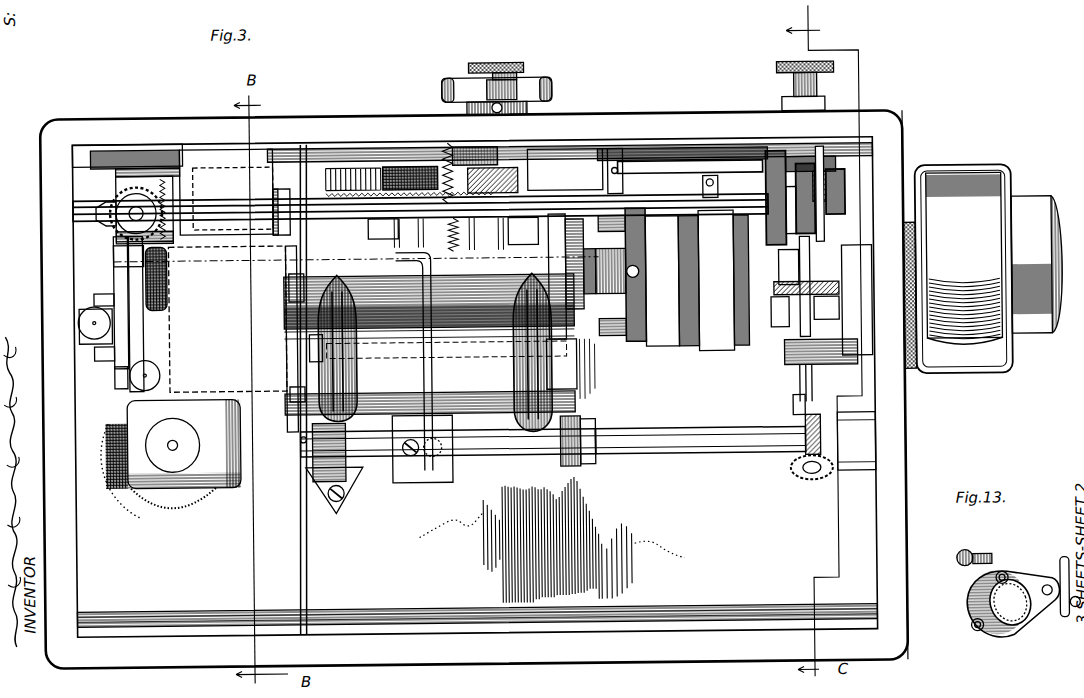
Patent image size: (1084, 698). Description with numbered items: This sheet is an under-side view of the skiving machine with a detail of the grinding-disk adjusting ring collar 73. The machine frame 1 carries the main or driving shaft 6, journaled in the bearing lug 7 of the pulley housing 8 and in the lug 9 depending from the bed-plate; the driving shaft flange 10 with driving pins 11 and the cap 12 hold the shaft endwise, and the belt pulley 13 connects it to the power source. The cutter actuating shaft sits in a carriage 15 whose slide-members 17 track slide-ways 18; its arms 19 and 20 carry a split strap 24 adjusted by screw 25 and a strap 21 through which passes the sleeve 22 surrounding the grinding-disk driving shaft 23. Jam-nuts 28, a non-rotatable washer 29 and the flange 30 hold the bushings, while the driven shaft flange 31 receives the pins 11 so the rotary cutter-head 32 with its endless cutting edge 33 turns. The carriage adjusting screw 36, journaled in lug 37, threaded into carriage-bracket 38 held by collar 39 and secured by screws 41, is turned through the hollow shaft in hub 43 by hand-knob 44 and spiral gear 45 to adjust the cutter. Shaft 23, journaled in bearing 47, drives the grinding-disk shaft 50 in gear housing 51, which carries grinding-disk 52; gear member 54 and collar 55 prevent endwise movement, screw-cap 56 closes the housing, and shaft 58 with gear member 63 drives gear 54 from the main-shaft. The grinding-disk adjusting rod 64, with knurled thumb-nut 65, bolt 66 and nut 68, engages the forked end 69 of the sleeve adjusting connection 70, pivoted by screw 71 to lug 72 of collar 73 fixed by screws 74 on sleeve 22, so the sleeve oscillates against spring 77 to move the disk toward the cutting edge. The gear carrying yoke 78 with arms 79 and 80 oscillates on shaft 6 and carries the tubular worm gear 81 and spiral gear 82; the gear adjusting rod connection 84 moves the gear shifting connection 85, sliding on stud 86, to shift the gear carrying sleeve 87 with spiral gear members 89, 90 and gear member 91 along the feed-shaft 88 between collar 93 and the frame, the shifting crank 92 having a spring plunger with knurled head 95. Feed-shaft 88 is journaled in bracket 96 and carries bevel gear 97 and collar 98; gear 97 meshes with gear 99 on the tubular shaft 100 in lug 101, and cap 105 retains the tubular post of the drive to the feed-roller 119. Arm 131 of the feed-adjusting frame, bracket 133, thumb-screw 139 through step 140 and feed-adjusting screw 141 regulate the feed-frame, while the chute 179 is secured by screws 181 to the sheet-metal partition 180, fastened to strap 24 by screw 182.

In FIG. 3, the machine frame 1 is at (906, 452).
In FIG. 3, the main or driving shaft 6 is at (870, 268).
In FIG. 3, the bearing lug 7 is at (1027, 205).
In FIG. 3, the pulley housing 8 is at (963, 180).
In FIG. 3, the lug 9 is at (714, 280).
In FIG. 3, the driving shaft flange 10 is at (680, 280).
In FIG. 3, the driving pins 11 is at (658, 232).
In FIG. 3, the cap 12 is at (1058, 245).
In FIG. 3, the belt pulley 13 is at (964, 258).
In FIG. 3, the carriage 15 is at (575, 318).
In FIG. 3, the slide-members 17 is at (335, 222).
In FIG. 3, the slide-ways 18 is at (578, 384).
In FIG. 3, the arm 19 is at (352, 372).
In FIG. 3, the arm 20 is at (525, 345).
In FIG. 3, the strap 21 is at (575, 422).
In FIG. 3, the sleeve 22 is at (475, 458).
In FIG. 3, the grinding-disk driving shaft 23 is at (724, 456).
In FIG. 3, the split strap 24 is at (329, 452).
In FIG. 3, the screw 25 is at (335, 503).
In FIG. 3, the jam-nuts 28 is at (603, 298).
In FIG. 3, the non-rotatable washer 29 is at (641, 272).
In FIG. 3, the flange 30 is at (275, 238).
In FIG. 3, the driven shaft flange 31 is at (638, 343).
In FIG. 3, the rotary cutter-head 32 is at (226, 190).
In FIG. 3, the endless cutting edge 33 is at (200, 189).
In FIG. 3, the carriage adjusting screw 36 is at (345, 166).
In FIG. 3, the lug 37 is at (564, 170).
In FIG. 3, the carriage-bracket 38 is at (388, 245).
In FIG. 3, the collar 39 is at (620, 150).
In FIG. 3, the screws 41 is at (395, 228).
In FIG. 3, the hub 43 is at (500, 148).
In FIG. 3, the hand-knob 44 is at (557, 86).
In FIG. 3, the spiral gear 45 is at (522, 175).
In FIG. 3, the bearing 47 is at (860, 428).
In FIG. 3, the grinding-disk shaft 50 is at (180, 430).
In FIG. 3, the gear housing 51 is at (222, 490).
In FIG. 3, the grinding-disk 52 is at (165, 500).
In FIG. 3, the gear member 54 is at (805, 435).
In FIG. 3, the collar 55 is at (598, 428).
In FIG. 3, the screw-cap 56 is at (118, 450).
In FIG. 3, the gear driven and gear driving shaft 58 is at (800, 385).
In FIG. 3, the gear member 63 is at (790, 465).
In FIG. 3, the grinding-disk adjusting rod 64 is at (432, 373).
In FIG. 13, the grinding-disk adjusting rod 64 is at (1058, 568).
In FIG. 3, the knurled thumb-nut 65 is at (498, 63).
In FIG. 3, the bolt 66 is at (474, 250).
In FIG. 3, the nut 68 is at (504, 250).
In FIG. 3, the forked end 69 is at (520, 240).
In FIG. 3, the sleeve adjusting connection 70 is at (410, 354).
In FIG. 3, the screw 71 is at (440, 445).
In FIG. 13, the screw 71 is at (962, 572).
In FIG. 13, the lug 72 is at (1035, 615).
In FIG. 13, the grinding-disk adjusting ring collar 73 is at (1008, 640).
In FIG. 3, the screws 74 is at (440, 412).
In FIG. 3, the spring 77 is at (448, 150).
In FIG. 3, the gear carrying yoke 78 is at (780, 270).
In FIG. 3, the arm 79 is at (775, 312).
In FIG. 3, the arm 80 is at (840, 312).
In FIG. 3, the tubular worm gear 81 is at (822, 165).
In FIG. 3, the spiral gear 82 is at (845, 288).
In FIG. 3, the gear adjusting rod connection 84 is at (808, 300).
In FIG. 3, the gear shifting connection 85 is at (820, 250).
In FIG. 3, the stud 86 is at (848, 368).
In FIG. 3, the gear carrying sleeve 87 is at (830, 185).
In FIG. 3, the feed-shaft 88 is at (668, 195).
In FIG. 3, the spiral gear member 89 is at (770, 158).
In FIG. 3, the spiral gear member 90 is at (808, 170).
In FIG. 3, the gear member 91 is at (850, 193).
In FIG. 3, the gear shifting crank 92 is at (830, 103).
In FIG. 3, the collar 93 is at (718, 200).
In FIG. 3, the knurled head 95 is at (780, 66).
In FIG. 3, the bracket 96 is at (258, 150).
In FIG. 3, the bevel gear 97 is at (172, 196).
In FIG. 3, the collar 98 is at (284, 188).
In FIG. 3, the gear 99 is at (118, 200).
In FIG. 3, the tubular shaft 100 is at (100, 210).
In FIG. 3, the lug 101 is at (140, 172).
In FIG. 3, the cap 105 is at (128, 150).
In FIG. 3, the feed-roller 119 is at (170, 287).
In FIG. 3, the arm 131 is at (118, 271).
In FIG. 3, the bracket 133 is at (120, 258).
In FIG. 3, the thumb-screw 139 is at (135, 380).
In FIG. 3, the step 140 is at (116, 373).
In FIG. 3, the feed-adjusting screw 141 is at (75, 318).
In FIG. 3, the chute 179 is at (272, 418).
In FIG. 3, the sheet-metal partition 180 is at (302, 558).
In FIG. 3, the screws 181 is at (290, 280).
In FIG. 3, the screw 182 is at (300, 441).